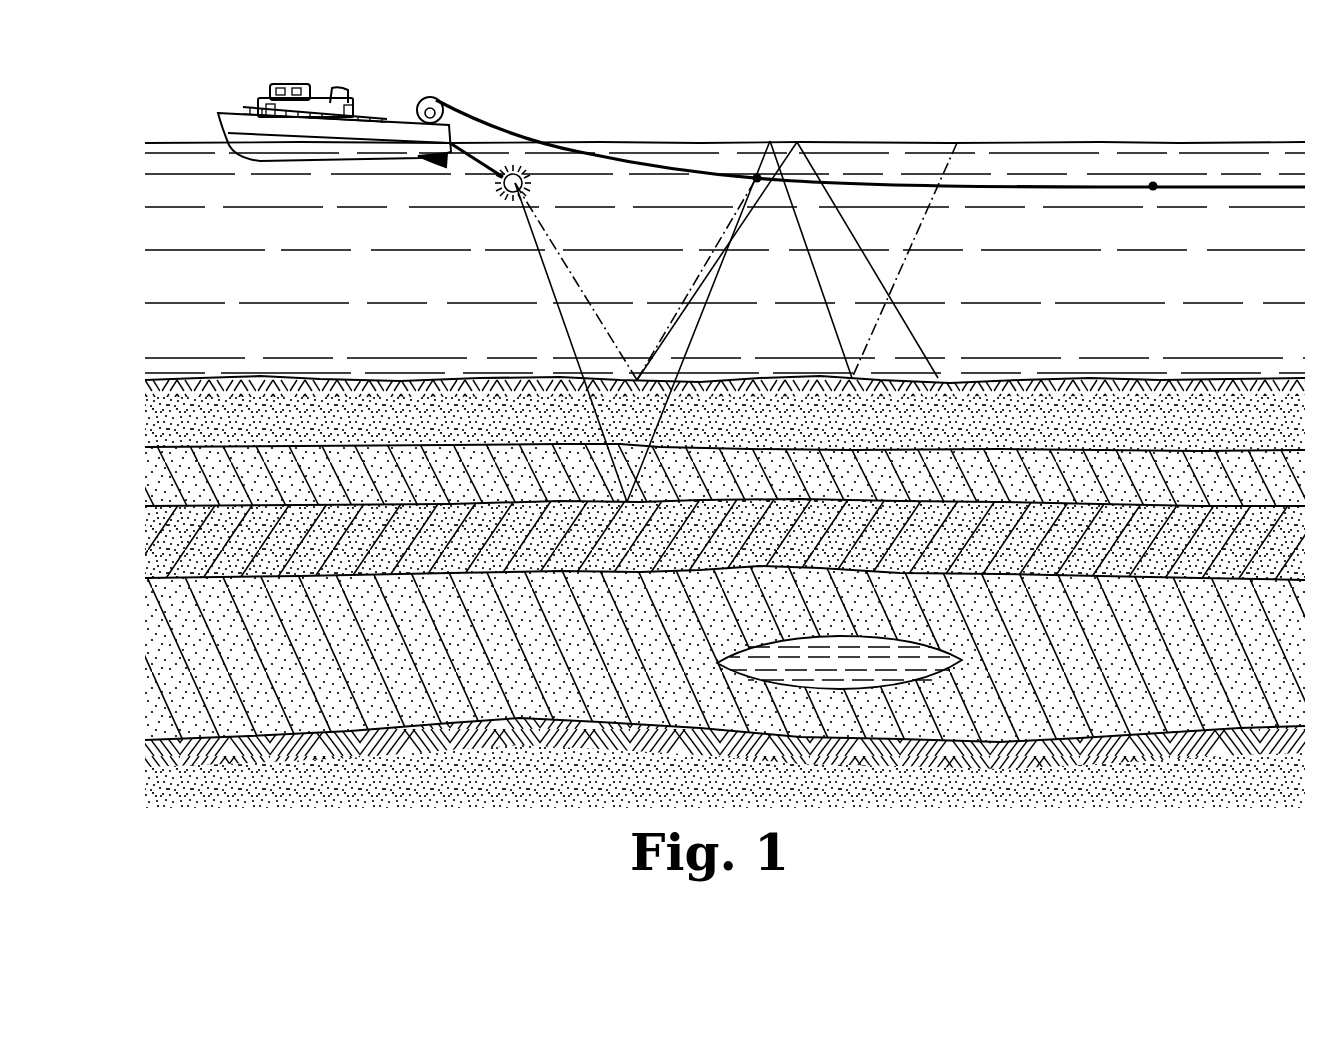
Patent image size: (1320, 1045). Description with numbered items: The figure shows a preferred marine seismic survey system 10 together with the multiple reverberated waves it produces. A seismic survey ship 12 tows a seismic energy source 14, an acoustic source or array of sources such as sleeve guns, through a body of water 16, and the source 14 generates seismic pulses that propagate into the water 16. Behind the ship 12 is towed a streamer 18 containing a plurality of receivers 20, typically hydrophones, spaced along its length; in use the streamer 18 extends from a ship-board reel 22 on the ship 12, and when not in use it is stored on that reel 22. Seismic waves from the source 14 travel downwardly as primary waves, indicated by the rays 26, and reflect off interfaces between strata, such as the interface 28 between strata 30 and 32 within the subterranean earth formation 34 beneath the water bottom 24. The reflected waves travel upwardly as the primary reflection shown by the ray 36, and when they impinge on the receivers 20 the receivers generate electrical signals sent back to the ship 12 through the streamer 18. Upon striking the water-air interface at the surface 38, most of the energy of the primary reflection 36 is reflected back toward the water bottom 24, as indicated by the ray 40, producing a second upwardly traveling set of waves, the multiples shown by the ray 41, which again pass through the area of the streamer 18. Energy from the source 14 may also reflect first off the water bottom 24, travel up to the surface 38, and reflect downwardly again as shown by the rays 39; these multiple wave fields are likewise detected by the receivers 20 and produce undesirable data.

The marine seismic survey system 10 is at (703, 80).
The seismic survey ship 12 is at (318, 98).
The seismic energy source 14 is at (503, 195).
The body of water 16 is at (1243, 294).
The streamer 18 is at (1259, 185).
The receivers 20 is at (757, 177).
The ship-board reel 22 is at (434, 98).
The water bottom 24 is at (1061, 380).
The rays 26 is at (556, 300).
The interface 28 is at (770, 497).
The stratum 30 is at (953, 533).
The stratum 32 is at (1140, 480).
The subterranean earth formation 34 is at (1052, 810).
The ray 36 is at (698, 332).
The water surface 38 is at (927, 141).
The rays 39 is at (838, 208).
The ray 40 is at (815, 283).
The ray 41 is at (907, 263).